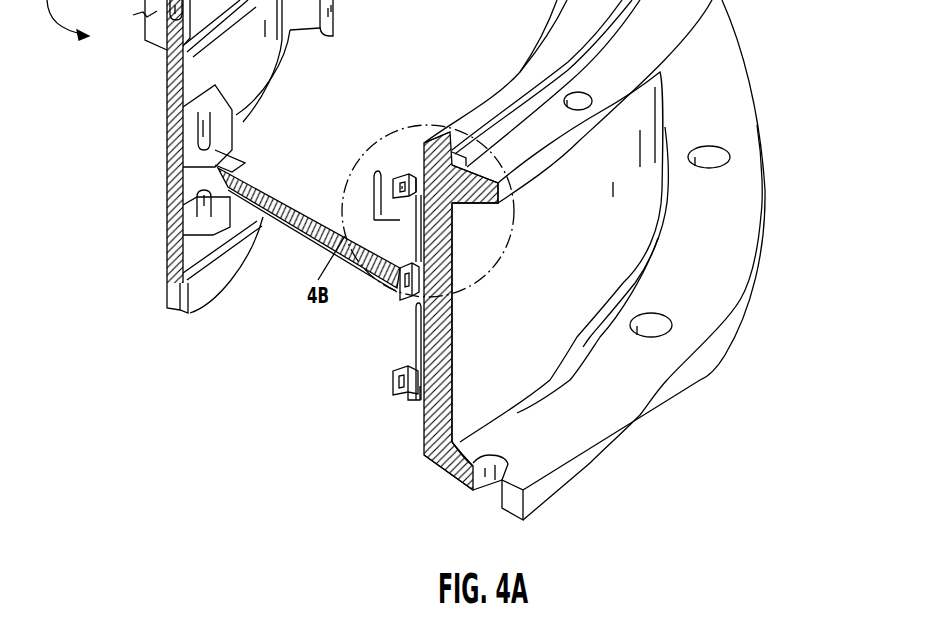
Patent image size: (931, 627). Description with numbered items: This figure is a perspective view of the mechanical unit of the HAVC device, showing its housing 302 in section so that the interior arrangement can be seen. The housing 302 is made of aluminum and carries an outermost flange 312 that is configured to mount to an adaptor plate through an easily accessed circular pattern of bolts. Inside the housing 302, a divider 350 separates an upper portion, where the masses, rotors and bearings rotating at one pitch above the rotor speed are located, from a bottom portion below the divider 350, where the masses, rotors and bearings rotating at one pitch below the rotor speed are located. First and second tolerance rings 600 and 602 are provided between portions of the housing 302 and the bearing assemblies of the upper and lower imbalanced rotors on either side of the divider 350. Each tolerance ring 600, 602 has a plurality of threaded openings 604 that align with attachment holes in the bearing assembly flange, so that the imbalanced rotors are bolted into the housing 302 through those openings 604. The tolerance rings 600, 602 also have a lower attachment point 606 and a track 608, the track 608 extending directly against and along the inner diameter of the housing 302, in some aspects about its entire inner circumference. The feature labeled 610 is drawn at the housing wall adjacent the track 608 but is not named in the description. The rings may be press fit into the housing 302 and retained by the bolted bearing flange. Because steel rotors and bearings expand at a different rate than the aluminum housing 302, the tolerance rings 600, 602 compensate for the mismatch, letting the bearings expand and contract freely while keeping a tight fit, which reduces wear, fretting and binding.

The housing 302 is at (547, 275).
The outermost flange 312 is at (630, 427).
The divider 350 is at (305, 229).
The first tolerance ring 600 is at (376, 220).
The second tolerance ring 602 is at (385, 313).
The threaded openings 604 is at (402, 200).
The lower attachment point 606 is at (420, 280).
The track 608 is at (414, 170).
The flange 610 is at (455, 223).